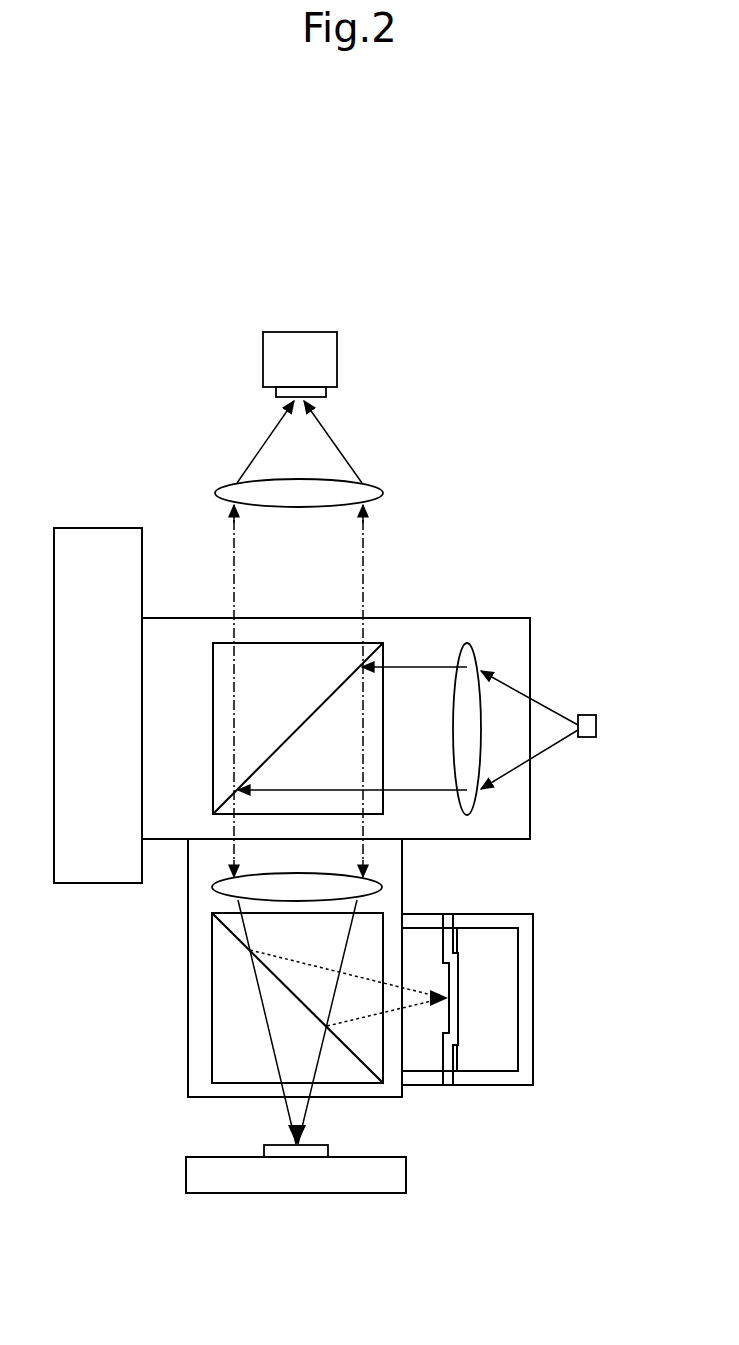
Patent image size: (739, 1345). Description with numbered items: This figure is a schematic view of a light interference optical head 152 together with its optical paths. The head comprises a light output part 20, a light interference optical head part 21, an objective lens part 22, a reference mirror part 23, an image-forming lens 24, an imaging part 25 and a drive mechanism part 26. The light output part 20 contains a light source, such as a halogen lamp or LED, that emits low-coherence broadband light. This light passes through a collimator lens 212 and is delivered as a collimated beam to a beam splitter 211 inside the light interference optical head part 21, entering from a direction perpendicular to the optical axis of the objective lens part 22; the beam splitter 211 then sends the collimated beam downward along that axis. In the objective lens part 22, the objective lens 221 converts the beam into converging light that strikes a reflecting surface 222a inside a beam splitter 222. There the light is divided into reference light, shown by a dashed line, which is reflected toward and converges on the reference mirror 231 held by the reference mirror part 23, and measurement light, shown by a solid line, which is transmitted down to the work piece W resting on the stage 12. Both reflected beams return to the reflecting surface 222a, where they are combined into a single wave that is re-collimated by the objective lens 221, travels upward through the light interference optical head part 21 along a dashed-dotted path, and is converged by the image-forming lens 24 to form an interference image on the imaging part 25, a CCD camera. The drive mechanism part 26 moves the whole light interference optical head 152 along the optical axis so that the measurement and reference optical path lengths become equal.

The light interference optical head 152 is at (325, 171).
The imaging part 25 is at (312, 333).
The image-forming lens 24 is at (378, 484).
The drive mechanism part 26 is at (93, 528).
The light interference optical head part 21 is at (481, 619).
The beam splitter 211 is at (228, 643).
The collimator lens 212 is at (460, 658).
The light output part 20 is at (591, 714).
The objective lens part 22 is at (188, 929).
The objective lens 221 is at (215, 892).
The beam splitter 222 is at (215, 1010).
The reflecting surface 222a is at (230, 933).
The reference mirror part 23 is at (495, 1088).
The reference mirror 231 is at (461, 975).
The work piece W is at (328, 1144).
The stage 12 is at (407, 1168).